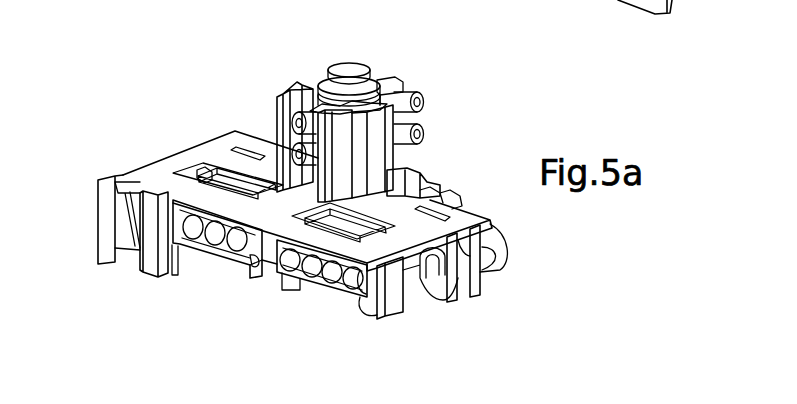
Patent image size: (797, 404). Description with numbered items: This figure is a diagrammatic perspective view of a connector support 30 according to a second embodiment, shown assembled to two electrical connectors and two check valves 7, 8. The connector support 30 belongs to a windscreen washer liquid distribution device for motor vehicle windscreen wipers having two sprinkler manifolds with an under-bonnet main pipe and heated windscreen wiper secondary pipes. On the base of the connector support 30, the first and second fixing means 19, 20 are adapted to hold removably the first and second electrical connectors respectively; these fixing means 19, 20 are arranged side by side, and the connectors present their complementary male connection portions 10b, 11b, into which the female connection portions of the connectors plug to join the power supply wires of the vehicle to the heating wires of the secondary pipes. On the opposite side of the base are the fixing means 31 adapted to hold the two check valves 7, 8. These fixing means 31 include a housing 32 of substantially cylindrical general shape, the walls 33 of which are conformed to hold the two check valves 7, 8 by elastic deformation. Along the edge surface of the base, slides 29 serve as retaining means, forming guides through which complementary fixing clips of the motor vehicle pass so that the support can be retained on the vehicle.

The check valve 7 is at (355, 72).
The check valve 8 is at (422, 132).
The male connection portion 10b is at (222, 245).
The male connection portion 11b is at (320, 292).
The first fixing means 19 is at (247, 275).
The second fixing means 20 is at (466, 310).
The slide 29 is at (98, 246).
The connector support 30 is at (157, 170).
The fixing means 31 is at (282, 80).
The housing 32 is at (346, 95).
The walls 33 is at (392, 80).